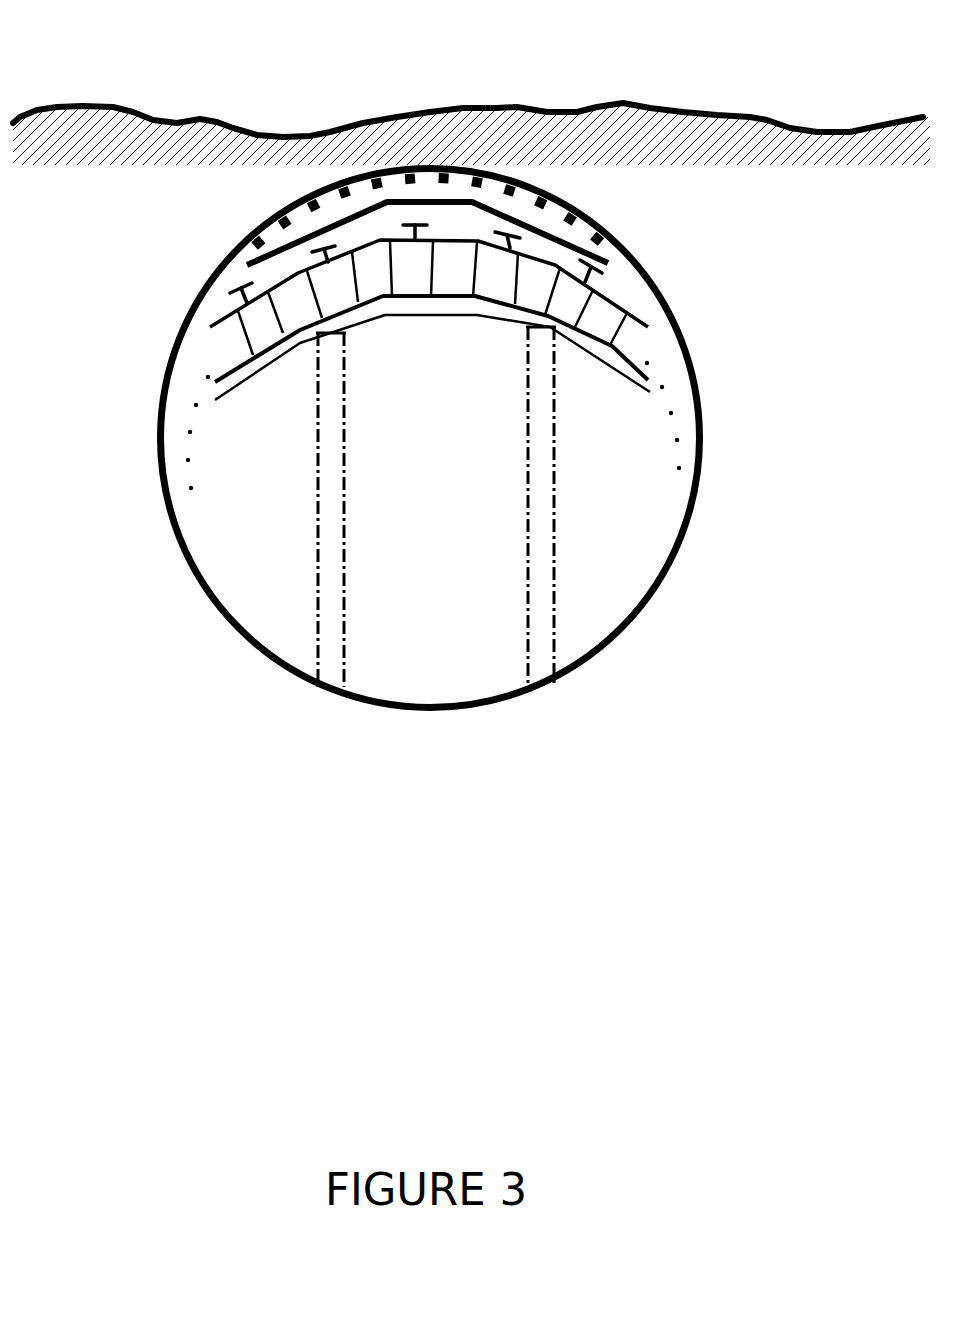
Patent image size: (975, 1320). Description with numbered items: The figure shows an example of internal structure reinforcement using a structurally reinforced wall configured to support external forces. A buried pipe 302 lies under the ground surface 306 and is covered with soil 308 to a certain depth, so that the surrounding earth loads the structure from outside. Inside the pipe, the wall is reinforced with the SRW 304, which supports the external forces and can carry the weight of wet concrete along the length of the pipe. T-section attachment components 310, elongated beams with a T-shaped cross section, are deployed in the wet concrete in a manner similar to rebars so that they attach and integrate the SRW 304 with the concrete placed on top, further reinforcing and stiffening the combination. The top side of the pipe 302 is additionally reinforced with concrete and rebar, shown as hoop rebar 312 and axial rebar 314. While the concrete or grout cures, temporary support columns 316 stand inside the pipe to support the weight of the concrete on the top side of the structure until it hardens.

The pipe 302 is at (660, 547).
The SRW 304 is at (660, 335).
The ground surface 306 is at (733, 107).
The soil 308 is at (793, 170).
The T-section attachment components 310 is at (228, 288).
The hoop rebar 312 is at (250, 272).
The axial rebar 314 is at (577, 227).
The temporary support columns 316 is at (538, 489).